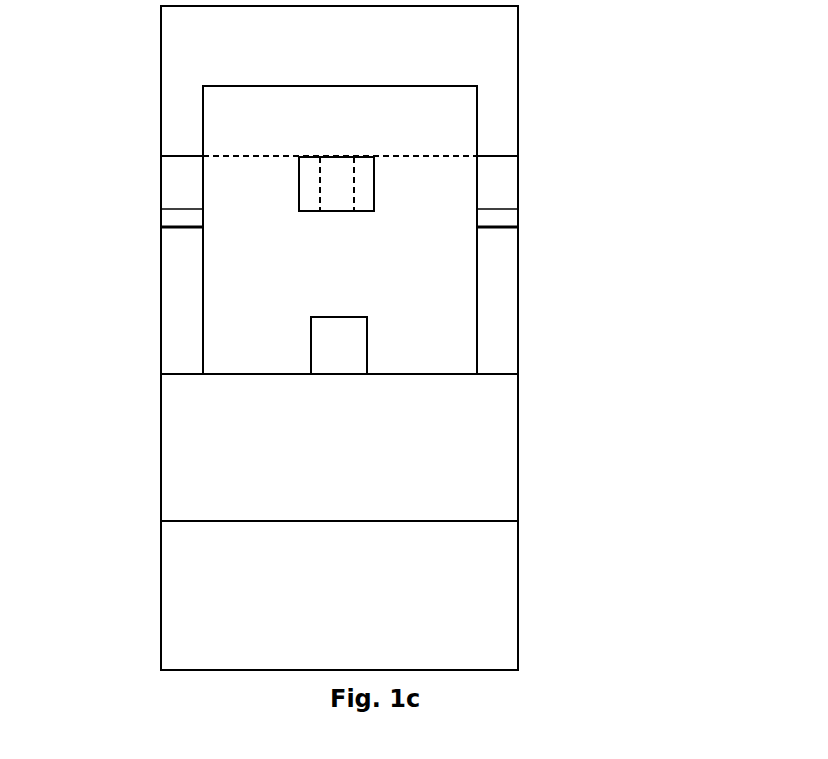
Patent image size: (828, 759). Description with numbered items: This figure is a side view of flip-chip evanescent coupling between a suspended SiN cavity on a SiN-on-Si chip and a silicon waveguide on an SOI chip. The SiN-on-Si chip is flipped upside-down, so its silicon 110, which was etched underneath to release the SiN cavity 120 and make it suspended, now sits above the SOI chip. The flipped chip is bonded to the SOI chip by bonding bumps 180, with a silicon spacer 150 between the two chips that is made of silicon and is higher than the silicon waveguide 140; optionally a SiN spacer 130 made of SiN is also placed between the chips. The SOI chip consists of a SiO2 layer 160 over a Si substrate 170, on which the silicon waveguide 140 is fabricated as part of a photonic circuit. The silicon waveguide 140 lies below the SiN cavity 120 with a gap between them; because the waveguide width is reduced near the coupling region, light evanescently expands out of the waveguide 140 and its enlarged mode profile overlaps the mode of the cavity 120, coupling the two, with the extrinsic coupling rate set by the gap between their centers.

The silicon 110 is at (214, 52).
The SiN cavity 120 is at (312, 201).
The SiN spacer 130 is at (509, 173).
The silicon waveguide 140 is at (334, 356).
The silicon spacer 150 is at (178, 351).
The SiO2 layer 160 is at (489, 473).
The Si substrate 170 is at (492, 611).
The bonding bumps 180 is at (518, 217).